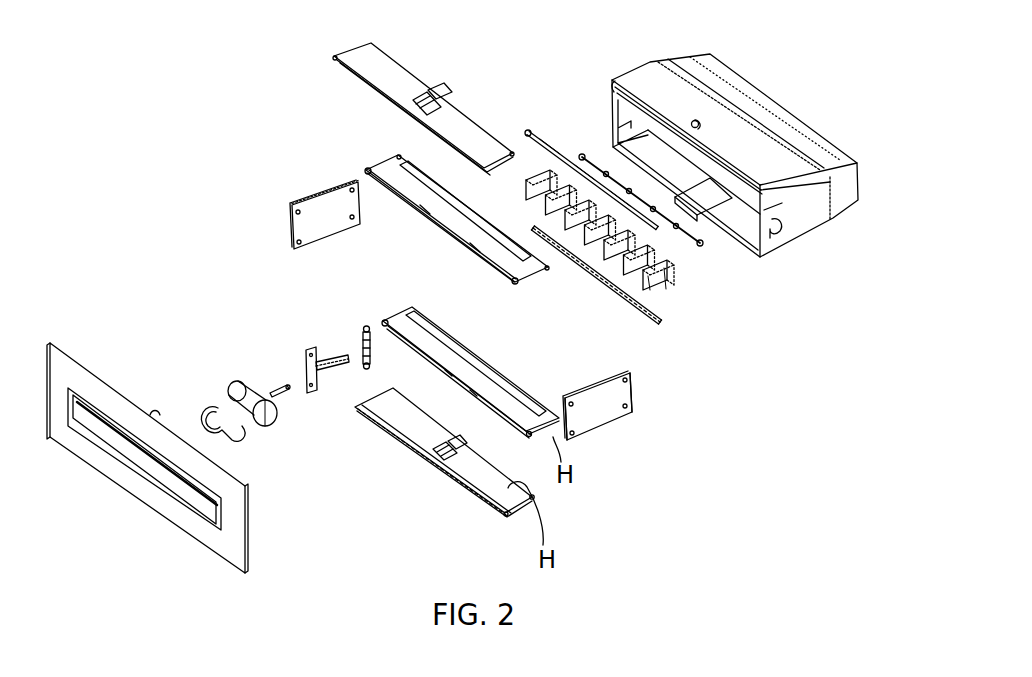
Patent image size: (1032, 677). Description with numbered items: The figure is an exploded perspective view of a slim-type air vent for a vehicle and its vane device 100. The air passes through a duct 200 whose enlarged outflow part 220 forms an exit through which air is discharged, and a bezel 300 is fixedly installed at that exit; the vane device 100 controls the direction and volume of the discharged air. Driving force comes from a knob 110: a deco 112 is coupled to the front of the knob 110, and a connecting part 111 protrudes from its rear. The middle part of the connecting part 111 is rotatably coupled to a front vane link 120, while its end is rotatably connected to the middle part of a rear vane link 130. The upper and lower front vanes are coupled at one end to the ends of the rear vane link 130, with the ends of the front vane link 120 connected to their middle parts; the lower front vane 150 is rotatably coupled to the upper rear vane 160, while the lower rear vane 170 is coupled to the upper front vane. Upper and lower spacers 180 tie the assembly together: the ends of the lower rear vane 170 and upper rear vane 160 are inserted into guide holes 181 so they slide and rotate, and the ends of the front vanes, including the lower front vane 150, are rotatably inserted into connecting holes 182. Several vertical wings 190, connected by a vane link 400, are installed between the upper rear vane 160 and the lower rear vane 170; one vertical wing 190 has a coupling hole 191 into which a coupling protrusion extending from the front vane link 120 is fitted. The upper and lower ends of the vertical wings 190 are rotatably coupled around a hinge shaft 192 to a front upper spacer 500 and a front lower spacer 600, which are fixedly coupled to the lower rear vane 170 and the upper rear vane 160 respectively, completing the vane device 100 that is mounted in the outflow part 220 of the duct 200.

The vane device 100 is at (250, 95).
The knob 110 is at (280, 426).
The connecting part 111 is at (278, 388).
The deco 112 is at (200, 410).
The front vane link 120 is at (310, 350).
The rear vane link 130 is at (370, 369).
The lower front vane 150 is at (334, 54).
The upper rear vane 160 is at (385, 163).
The lower rear vane 170 is at (503, 370).
The spacer 180 is at (312, 210).
The guide hole 181 is at (632, 410).
The connecting hole 182 is at (568, 439).
The vertical wing 190 is at (672, 266).
The coupling hole 191 is at (653, 283).
The hinge shaft 192 is at (652, 258).
The duct 200 is at (783, 101).
The outflow part 220 is at (737, 214).
The bezel 300 is at (58, 360).
The vane link 400 is at (585, 155).
The front upper spacer 500 is at (533, 130).
The front lower spacer 600 is at (650, 323).